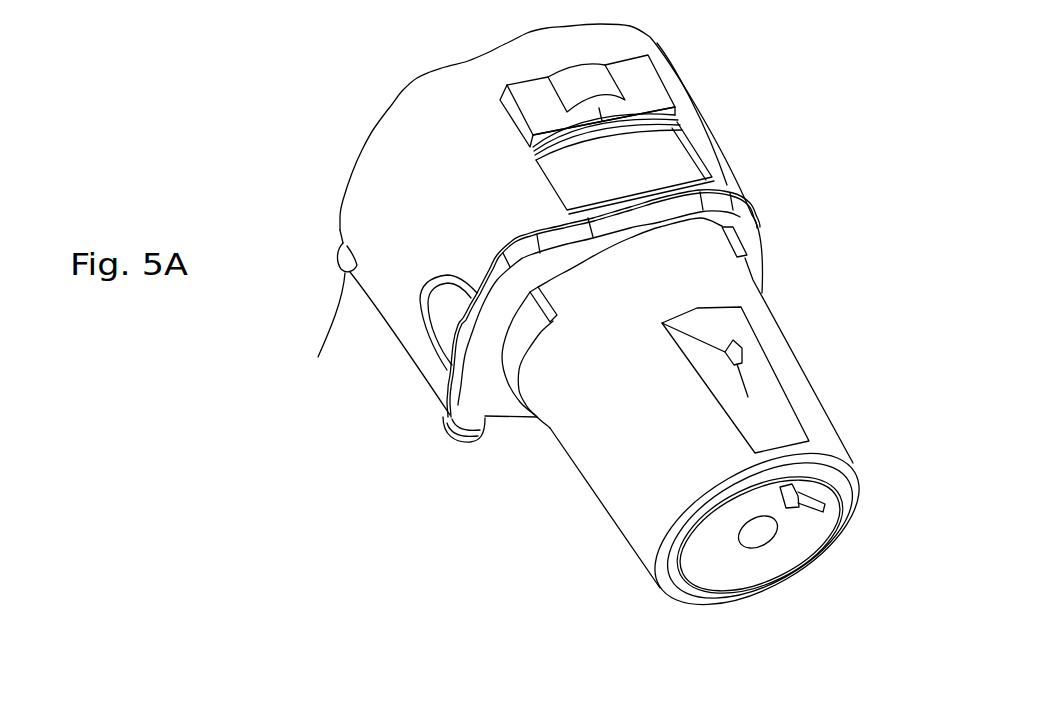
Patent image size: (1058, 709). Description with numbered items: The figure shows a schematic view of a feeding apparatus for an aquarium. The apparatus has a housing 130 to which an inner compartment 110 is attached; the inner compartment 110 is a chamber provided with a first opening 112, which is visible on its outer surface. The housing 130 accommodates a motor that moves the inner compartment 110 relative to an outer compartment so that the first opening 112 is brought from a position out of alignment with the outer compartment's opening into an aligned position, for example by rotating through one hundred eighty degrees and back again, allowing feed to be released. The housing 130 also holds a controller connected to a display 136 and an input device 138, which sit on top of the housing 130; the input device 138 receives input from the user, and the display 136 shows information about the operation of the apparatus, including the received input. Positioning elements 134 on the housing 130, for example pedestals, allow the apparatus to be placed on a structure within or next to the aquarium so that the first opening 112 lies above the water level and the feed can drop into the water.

The inner compartment 110 is at (633, 493).
The first opening 112 is at (748, 398).
The housing 130 is at (417, 243).
The positioning elements 134 is at (445, 419).
The display 136 is at (657, 158).
The input device 138 is at (643, 88).